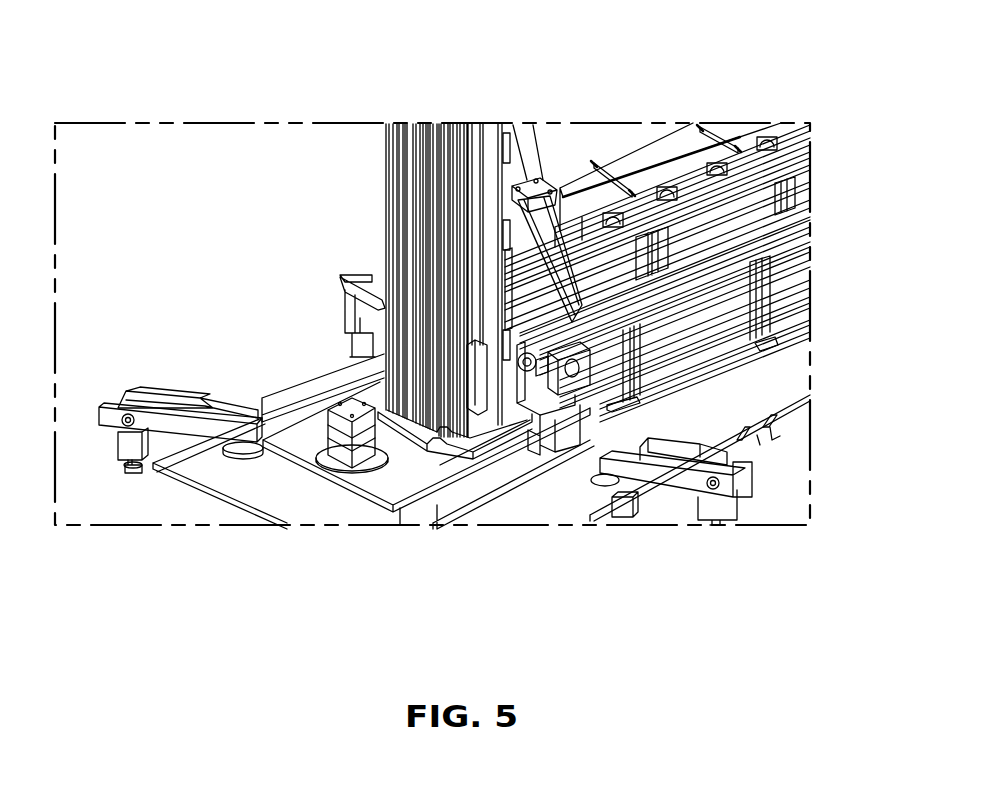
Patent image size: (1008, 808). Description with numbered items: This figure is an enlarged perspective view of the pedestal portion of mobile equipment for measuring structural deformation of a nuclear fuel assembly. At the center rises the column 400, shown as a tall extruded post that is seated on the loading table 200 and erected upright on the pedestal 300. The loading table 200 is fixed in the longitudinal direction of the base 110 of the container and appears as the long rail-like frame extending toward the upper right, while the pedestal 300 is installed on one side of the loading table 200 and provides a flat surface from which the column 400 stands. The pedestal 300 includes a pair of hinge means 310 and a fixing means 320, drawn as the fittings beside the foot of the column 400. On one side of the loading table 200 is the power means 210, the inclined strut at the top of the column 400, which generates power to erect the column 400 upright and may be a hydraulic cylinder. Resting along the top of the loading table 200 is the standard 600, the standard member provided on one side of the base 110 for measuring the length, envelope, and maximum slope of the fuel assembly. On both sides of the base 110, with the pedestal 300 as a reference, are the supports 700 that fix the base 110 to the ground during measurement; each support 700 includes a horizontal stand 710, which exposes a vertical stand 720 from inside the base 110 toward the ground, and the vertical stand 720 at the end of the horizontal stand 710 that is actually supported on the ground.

The base 110 is at (600, 505).
The loading table 200 is at (780, 337).
The power means 210 is at (539, 162).
The pedestal 300 is at (427, 473).
The hinge means 310 is at (547, 383).
The fixing means 320 is at (338, 453).
The column 400 is at (454, 128).
The standard 600 is at (644, 163).
The support 700 is at (164, 521).
The horizontal stand 710 is at (108, 425).
The vertical stand 720 is at (137, 442).